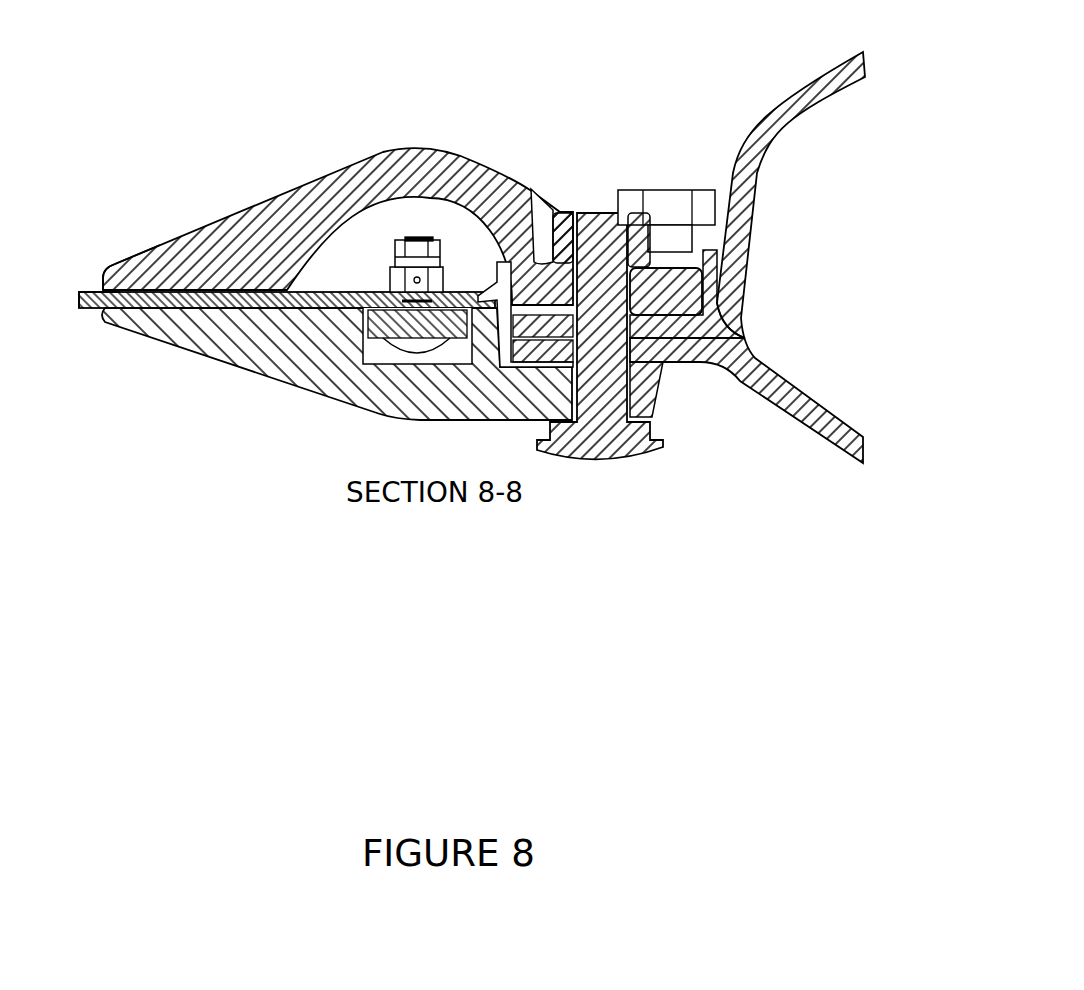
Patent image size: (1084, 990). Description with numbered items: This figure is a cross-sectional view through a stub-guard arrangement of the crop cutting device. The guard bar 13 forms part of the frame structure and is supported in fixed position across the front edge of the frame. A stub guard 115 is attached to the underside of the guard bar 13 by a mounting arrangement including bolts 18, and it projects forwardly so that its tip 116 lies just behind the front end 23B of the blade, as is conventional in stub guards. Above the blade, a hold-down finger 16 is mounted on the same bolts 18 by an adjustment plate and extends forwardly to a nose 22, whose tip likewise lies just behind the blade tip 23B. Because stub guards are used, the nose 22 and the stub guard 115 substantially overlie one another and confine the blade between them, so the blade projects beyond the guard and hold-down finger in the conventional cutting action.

The guard bar 13 is at (668, 348).
The hold-down finger 16 is at (388, 183).
The bolt 18 is at (590, 404).
The nose 22 is at (118, 266).
The front end 23B is at (76, 291).
The stub guard 115 is at (310, 392).
The tip 116 is at (107, 318).